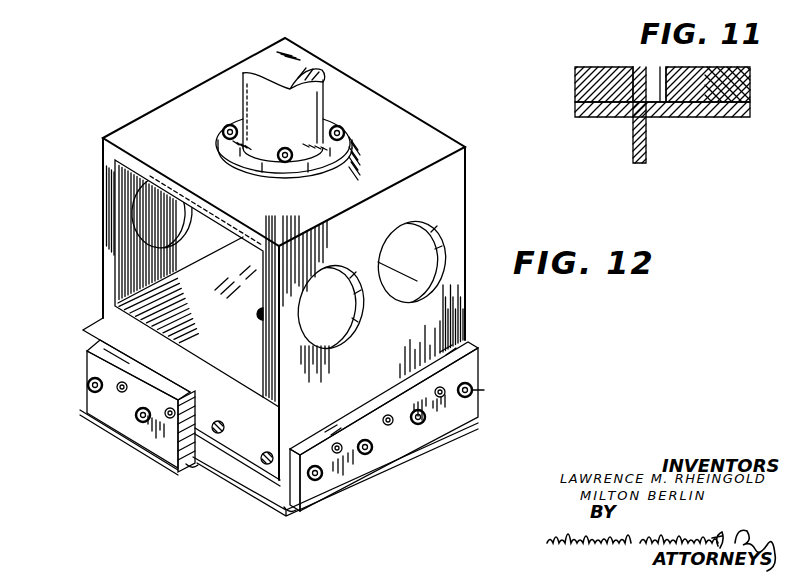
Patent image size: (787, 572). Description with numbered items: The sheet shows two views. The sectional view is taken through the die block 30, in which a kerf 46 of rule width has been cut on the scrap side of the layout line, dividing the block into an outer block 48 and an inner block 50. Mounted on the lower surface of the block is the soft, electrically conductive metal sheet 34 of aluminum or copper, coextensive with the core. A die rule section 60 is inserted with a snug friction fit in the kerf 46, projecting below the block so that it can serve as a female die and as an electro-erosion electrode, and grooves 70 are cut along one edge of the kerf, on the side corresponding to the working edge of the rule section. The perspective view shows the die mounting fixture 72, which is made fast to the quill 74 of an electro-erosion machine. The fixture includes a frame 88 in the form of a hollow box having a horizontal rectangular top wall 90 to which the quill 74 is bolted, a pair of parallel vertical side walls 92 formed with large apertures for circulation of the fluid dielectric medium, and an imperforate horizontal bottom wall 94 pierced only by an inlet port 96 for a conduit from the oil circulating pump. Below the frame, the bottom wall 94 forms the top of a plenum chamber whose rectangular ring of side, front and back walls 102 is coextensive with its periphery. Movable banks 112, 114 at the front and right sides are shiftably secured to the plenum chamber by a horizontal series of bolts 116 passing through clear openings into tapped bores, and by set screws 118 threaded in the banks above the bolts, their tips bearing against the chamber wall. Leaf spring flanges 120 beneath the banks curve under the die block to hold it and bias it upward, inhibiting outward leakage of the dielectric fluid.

In FIG. 12, the mounting fixture 72 is at (88, 229).
In FIG. 12, the top wall 90 is at (397, 120).
In FIG. 12, the side walls 92 is at (455, 186).
In FIG. 12, the frame 88 is at (455, 235).
In FIG. 12, the quill 74 is at (313, 78).
In FIG. 12, the bottom wall 94 is at (104, 318).
In FIG. 12, the inlet port 96 is at (262, 314).
In FIG. 12, the side, front and back walls 102 is at (245, 418).
In FIG. 12, the movable bank 112 is at (118, 418).
In FIG. 12, the movable bank 114 is at (395, 455).
In FIG. 12, the bolts 116 is at (88, 386).
In FIG. 12, the set screws 118 is at (171, 420).
In FIG. 12, the leaf spring flanges 120 is at (86, 418).
In FIG. 12, the die block 30 is at (243, 481).
In FIG. 12, the metal sheet 34 is at (250, 502).
In FIG. 11, the metal sheet 34 is at (720, 116).
In FIG. 11, the outer block 48 is at (609, 74).
In FIG. 11, the inner block 50 is at (745, 70).
In FIG. 11, the kerf 46 is at (636, 103).
In FIG. 11, the grooves 70 is at (649, 108).
In FIG. 11, the die rule sections 60 is at (633, 152).